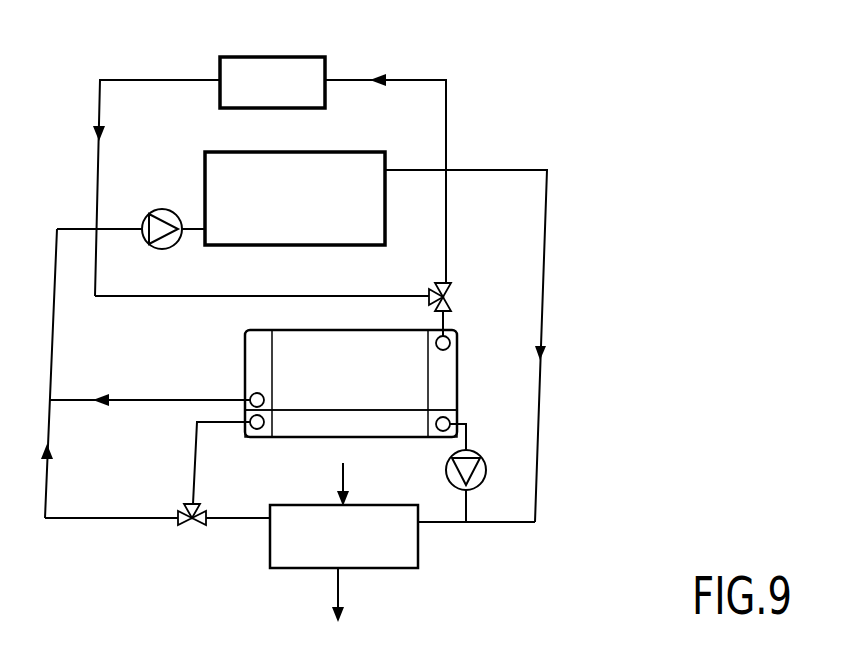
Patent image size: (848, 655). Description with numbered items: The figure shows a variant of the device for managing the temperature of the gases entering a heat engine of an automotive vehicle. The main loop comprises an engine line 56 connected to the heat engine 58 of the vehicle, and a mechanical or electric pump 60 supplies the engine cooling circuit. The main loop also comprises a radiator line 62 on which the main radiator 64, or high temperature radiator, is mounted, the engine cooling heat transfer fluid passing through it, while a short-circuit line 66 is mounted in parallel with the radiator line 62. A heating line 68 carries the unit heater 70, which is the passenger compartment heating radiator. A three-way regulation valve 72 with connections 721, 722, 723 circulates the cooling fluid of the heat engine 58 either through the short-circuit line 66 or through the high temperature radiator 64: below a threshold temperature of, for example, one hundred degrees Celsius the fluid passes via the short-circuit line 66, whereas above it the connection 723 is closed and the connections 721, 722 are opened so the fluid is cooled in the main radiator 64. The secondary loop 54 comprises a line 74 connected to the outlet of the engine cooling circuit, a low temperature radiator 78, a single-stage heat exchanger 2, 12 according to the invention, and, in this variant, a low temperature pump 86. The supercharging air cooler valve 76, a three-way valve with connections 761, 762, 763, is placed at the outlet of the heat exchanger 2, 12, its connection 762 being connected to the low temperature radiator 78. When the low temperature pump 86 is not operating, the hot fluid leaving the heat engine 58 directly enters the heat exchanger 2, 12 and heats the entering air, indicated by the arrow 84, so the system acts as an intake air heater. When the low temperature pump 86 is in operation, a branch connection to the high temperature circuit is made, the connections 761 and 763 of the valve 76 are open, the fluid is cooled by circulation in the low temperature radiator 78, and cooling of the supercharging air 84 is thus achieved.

The heat exchanger 2 is at (372, 564).
The heat exchanger 12 is at (394, 568).
The secondary loop 54 is at (545, 393).
The engine line 56 is at (113, 228).
The heat engine 58 is at (306, 211).
The pump 60 is at (162, 209).
The radiator line 62 is at (142, 400).
The main radiator 64 is at (290, 372).
The short-circuit line 66 is at (226, 295).
The heating line 68 is at (446, 78).
The unit heater 70 is at (288, 96).
The three-way regulation valve 72 is at (449, 288).
The connection of the regulation valve 721 is at (453, 284).
The connection of the regulation valve 722 is at (452, 311).
The connection of the regulation valve 723 is at (402, 282).
The line 74 is at (541, 260).
The supercharging air cooler valve 76 is at (177, 520).
The connection of the supercharging air cooler valve 761 is at (204, 527).
The connection of the supercharging air cooler valve 762 is at (182, 526).
The connection of the supercharging air cooler valve 763 is at (188, 504).
The low temperature radiator 78 is at (324, 426).
The supercharging air 84 is at (338, 590).
The low temperature pump 86 is at (480, 465).